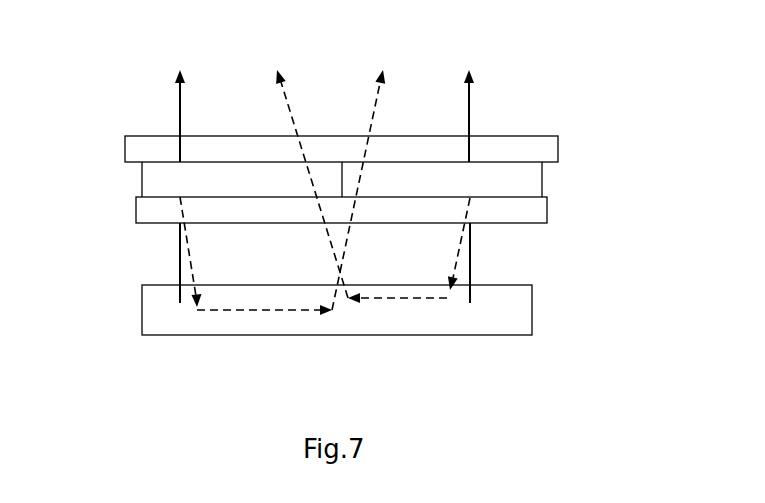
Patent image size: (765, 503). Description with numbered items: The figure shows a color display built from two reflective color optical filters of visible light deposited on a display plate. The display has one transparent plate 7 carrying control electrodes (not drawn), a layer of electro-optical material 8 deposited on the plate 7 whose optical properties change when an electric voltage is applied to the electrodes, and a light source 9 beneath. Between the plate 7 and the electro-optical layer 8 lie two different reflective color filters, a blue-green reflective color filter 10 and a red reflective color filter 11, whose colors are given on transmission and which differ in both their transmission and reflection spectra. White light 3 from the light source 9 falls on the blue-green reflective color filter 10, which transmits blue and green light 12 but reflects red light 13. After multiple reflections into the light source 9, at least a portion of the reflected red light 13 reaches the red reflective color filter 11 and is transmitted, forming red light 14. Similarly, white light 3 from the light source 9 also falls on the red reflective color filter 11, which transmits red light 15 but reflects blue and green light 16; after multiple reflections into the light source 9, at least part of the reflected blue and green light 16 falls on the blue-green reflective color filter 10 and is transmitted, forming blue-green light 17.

The white light 3 is at (180, 260).
The transparent plate 7 is at (508, 147).
The layer of electro-optical material 8 is at (542, 210).
The light source 9 is at (518, 308).
The blue-green reflective color filter 10 is at (532, 182).
The red reflective color filter 11 is at (150, 182).
The blue and green light 12 is at (479, 98).
The reflected red light 13 is at (455, 250).
The red light 14 is at (304, 166).
The red light 15 is at (169, 98).
The reflected blue and green light 16 is at (188, 252).
The blue-green light 17 is at (377, 172).